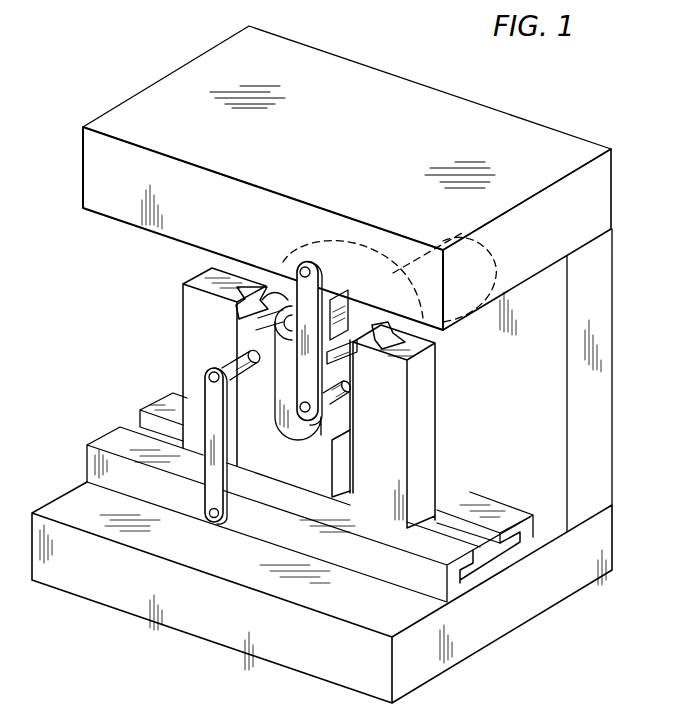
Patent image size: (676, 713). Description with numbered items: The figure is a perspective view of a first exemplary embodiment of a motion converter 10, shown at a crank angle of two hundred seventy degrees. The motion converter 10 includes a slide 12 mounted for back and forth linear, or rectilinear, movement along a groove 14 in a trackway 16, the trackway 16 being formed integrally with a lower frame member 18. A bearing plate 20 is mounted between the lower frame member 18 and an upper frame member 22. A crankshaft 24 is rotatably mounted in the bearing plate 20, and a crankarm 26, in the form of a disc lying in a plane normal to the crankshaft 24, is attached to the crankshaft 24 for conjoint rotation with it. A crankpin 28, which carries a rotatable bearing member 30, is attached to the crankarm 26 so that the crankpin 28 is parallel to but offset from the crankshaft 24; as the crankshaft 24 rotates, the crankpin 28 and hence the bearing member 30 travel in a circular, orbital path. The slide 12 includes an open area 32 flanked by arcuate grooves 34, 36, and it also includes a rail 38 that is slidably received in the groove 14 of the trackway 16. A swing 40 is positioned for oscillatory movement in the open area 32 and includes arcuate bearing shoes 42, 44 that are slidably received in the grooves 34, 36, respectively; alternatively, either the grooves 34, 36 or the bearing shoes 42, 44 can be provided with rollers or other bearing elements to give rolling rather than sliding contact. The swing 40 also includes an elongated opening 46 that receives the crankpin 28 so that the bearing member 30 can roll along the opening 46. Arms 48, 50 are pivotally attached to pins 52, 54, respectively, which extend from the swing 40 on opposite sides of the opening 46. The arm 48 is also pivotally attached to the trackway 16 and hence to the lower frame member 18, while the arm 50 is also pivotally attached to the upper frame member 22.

The motion converter 10 is at (110, 33).
The slide 12 is at (433, 400).
The groove 14 is at (488, 556).
The trackway 16 is at (405, 574).
The lower frame member 18 is at (483, 632).
The bearing plate 20 is at (600, 287).
The upper frame member 22 is at (497, 132).
The crankshaft 24 is at (500, 246).
The crankarm 26 is at (360, 238).
The crankpin 28 is at (238, 338).
The bearing member 30 is at (264, 297).
The open area 32 is at (286, 457).
The arcuate groove 34 is at (247, 283).
The arcuate groove 36 is at (378, 342).
The rail 38 is at (440, 531).
The swing 40 is at (343, 302).
The arcuate bearing shoe 42 is at (193, 306).
The arcuate bearing shoe 44 is at (352, 406).
The elongated opening 46 is at (276, 420).
The arm 48 is at (204, 497).
The arm 50 is at (315, 273).
The pin 52 is at (235, 358).
The pin 54 is at (350, 430).